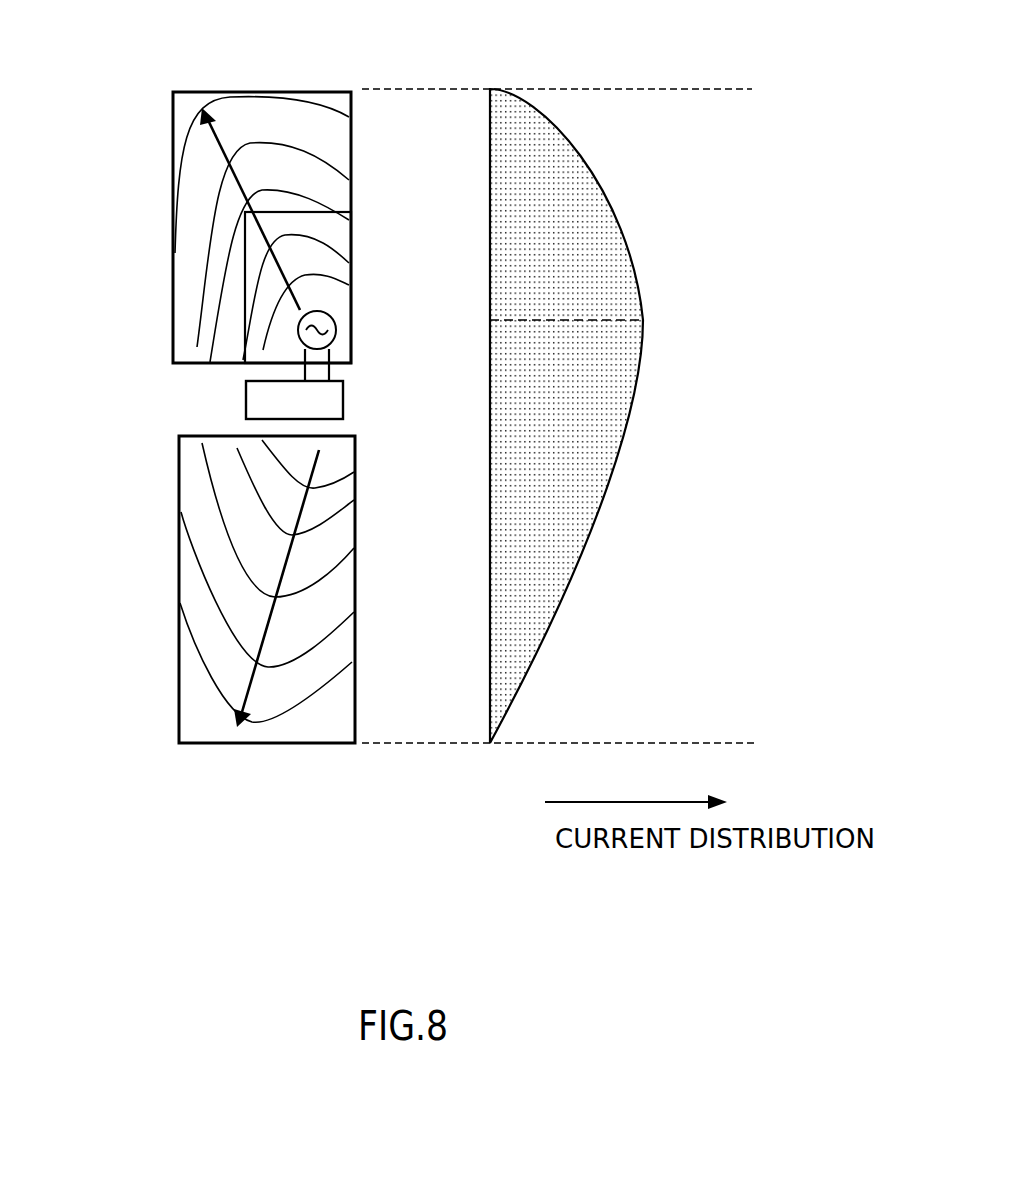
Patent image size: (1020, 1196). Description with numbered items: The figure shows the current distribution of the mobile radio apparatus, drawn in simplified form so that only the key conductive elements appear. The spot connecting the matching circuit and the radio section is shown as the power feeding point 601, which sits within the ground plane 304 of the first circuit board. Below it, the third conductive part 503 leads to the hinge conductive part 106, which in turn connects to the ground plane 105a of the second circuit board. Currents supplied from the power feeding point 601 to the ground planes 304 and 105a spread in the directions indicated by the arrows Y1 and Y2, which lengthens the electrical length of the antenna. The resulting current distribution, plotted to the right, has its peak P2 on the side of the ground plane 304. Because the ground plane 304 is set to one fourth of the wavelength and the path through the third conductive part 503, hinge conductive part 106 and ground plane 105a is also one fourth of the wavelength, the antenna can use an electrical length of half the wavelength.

The ground plane 304 is at (173, 192).
The power feeding point 601 is at (328, 314).
The third conductive part 503 is at (316, 364).
The hinge conductive part 106 is at (326, 398).
The ground plane 105a is at (178, 558).
The arrow Y1 is at (216, 140).
The arrow Y2 is at (250, 693).
The peak P2 is at (546, 320).